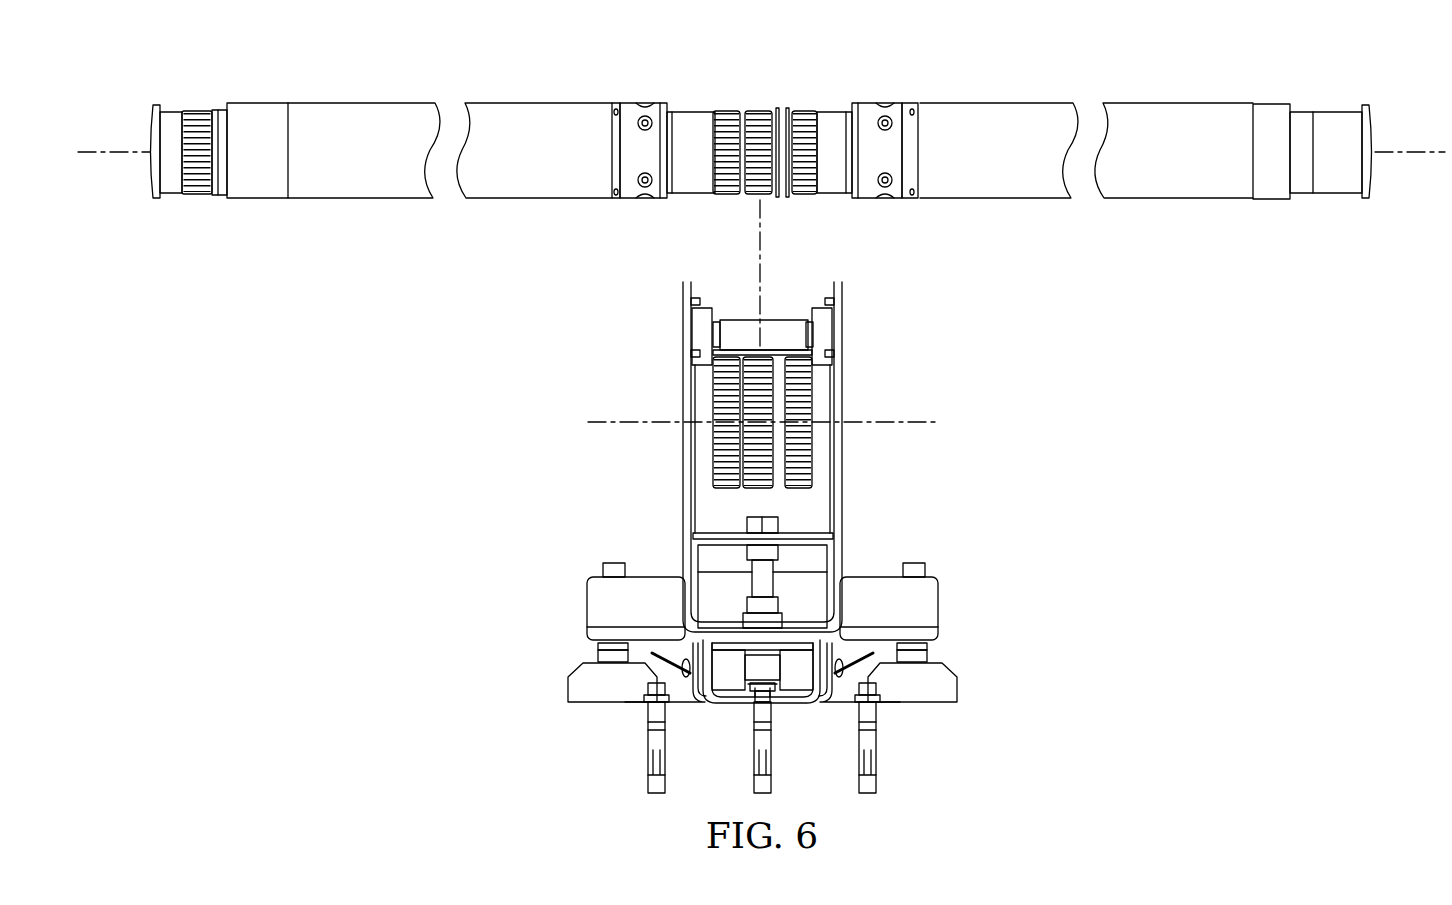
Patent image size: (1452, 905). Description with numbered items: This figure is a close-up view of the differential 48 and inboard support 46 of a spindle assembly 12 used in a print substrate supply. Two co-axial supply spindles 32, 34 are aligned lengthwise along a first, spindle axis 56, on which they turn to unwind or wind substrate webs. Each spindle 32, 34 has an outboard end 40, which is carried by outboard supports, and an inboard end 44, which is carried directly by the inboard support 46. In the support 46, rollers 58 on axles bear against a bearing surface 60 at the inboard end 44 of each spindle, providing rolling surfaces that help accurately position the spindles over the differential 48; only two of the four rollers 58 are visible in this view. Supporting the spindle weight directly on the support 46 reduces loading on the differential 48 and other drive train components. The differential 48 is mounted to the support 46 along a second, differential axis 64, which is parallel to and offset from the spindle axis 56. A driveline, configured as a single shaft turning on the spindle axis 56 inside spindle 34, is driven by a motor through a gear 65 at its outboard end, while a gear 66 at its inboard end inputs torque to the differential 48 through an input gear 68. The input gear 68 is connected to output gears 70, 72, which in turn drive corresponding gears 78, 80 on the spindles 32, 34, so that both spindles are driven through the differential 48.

The spindle assembly 12 is at (753, 524).
The supply spindle 32 is at (1175, 103).
The supply spindle 34 is at (360, 103).
The outboard end 40 is at (170, 112).
The inboard end 44 is at (695, 112).
The inboard support 46 is at (771, 444).
The differential 48 is at (722, 497).
The spindle axis 56 is at (1410, 150).
The roller 58 is at (707, 307).
The bearing surface 60 is at (697, 185).
The differential axis 64 is at (920, 425).
The gear 65 is at (197, 112).
The gear 66 is at (760, 112).
The input gear 68 is at (770, 490).
The output gear 70 is at (813, 487).
The output gear 72 is at (715, 487).
The gear 78 is at (800, 112).
The gear 80 is at (732, 112).